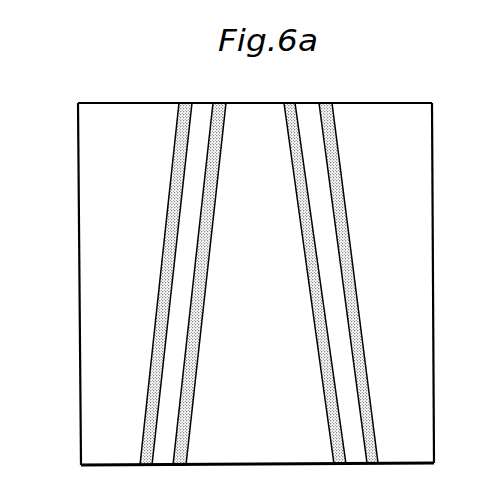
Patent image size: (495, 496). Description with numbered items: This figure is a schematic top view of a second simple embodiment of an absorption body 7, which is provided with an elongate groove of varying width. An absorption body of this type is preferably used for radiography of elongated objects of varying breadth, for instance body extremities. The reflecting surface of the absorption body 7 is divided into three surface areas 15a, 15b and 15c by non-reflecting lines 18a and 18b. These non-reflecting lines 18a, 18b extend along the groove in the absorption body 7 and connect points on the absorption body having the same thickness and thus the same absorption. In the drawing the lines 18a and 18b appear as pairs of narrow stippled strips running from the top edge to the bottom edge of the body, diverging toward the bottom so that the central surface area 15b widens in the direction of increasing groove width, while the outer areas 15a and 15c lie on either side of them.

The absorption body 7 is at (395, 478).
The surface area 15a is at (97, 370).
The surface area 15b is at (350, 407).
The surface area 15c is at (260, 448).
The non-reflecting line 18a is at (337, 165).
The non-reflecting line 18b is at (210, 212).